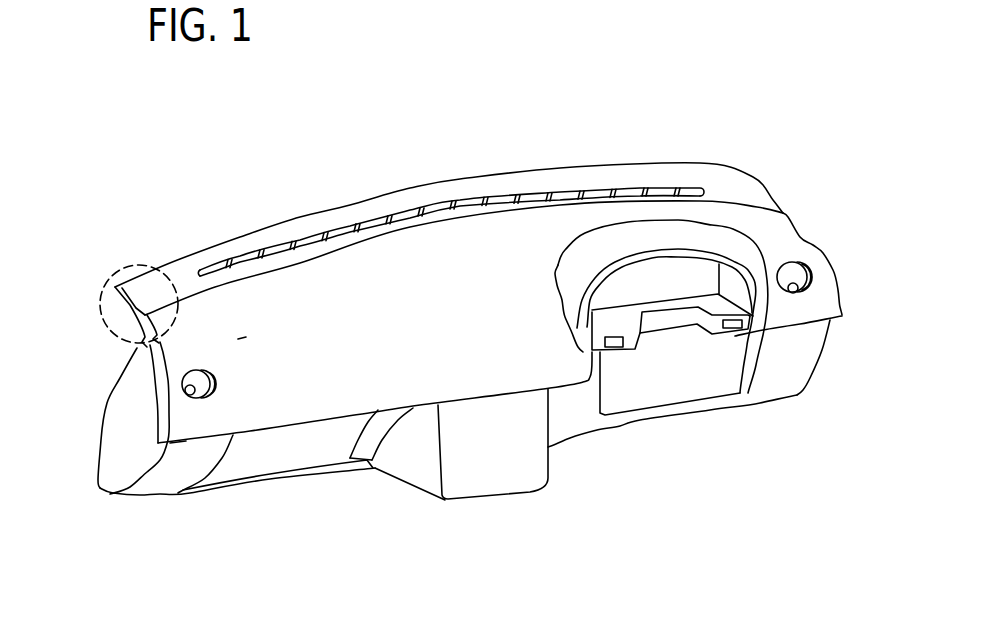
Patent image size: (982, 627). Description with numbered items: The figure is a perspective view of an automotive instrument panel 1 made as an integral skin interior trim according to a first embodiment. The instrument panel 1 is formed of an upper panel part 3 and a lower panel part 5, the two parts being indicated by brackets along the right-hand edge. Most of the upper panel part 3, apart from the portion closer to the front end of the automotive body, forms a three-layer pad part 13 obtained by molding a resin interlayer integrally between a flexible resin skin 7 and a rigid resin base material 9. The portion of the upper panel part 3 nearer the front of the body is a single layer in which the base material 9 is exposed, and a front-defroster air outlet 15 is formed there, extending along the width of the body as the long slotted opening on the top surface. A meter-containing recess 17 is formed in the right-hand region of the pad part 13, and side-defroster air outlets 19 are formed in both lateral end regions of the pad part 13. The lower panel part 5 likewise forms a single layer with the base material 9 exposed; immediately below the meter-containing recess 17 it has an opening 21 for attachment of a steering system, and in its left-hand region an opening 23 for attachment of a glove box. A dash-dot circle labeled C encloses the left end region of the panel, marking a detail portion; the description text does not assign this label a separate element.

The instrument panel 1 is at (655, 135).
The upper panel part 3 is at (862, 170).
The lower panel part 5 is at (862, 318).
The flexible resin skin 7 is at (242, 338).
The rigid resin base material 9 is at (212, 257).
The pad part 13 is at (177, 446).
The front-defroster air outlet 15 is at (473, 203).
The meter-containing recess 17 is at (697, 278).
The side-defroster air outlets 19 is at (190, 393).
The opening for attachment of a steering system 21 is at (667, 383).
The opening for attachment of a glove box 23 is at (302, 449).
The detail portion C is at (127, 270).